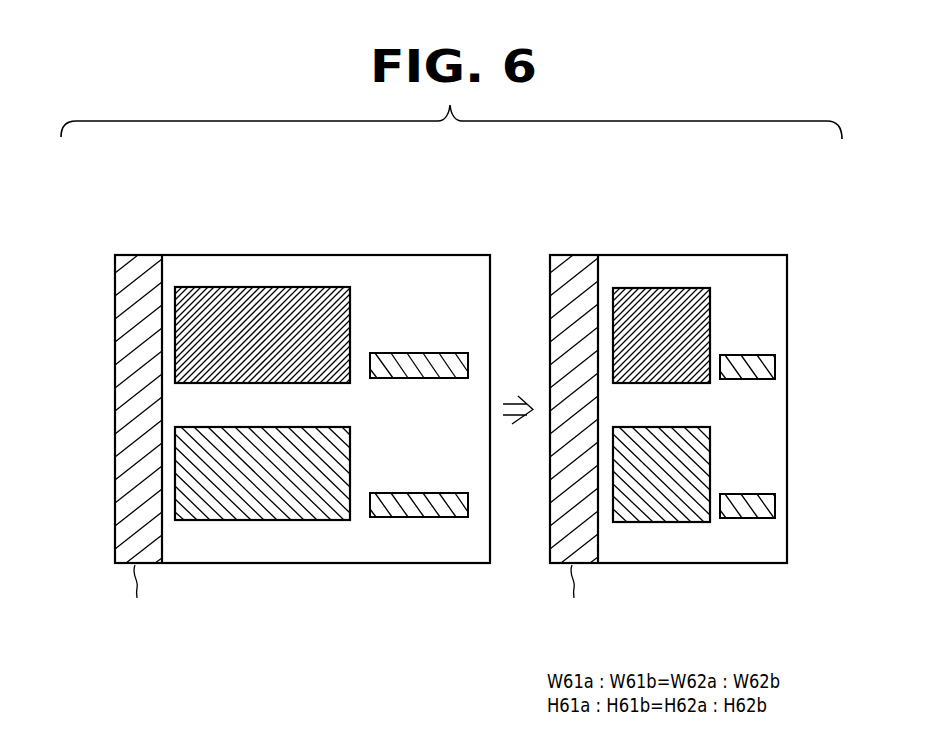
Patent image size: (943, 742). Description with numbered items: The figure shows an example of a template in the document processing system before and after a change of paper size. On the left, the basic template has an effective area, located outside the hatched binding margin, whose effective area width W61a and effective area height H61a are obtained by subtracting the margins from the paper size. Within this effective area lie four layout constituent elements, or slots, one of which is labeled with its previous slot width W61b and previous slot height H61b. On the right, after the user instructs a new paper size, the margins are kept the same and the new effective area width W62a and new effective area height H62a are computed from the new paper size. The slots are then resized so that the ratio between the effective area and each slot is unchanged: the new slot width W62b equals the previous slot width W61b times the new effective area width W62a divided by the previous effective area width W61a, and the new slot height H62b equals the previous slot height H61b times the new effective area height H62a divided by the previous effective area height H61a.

The effective area width W61a is at (490, 255).
The effective area height H61a is at (112, 255).
The previous slot width W61b is at (287, 321).
The previous slot height H61b is at (287, 335).
The new effective area width W62a is at (787, 255).
The new effective area height H62a is at (795, 255).
The new slot width W62b is at (686, 323).
The new slot height H62b is at (686, 335).